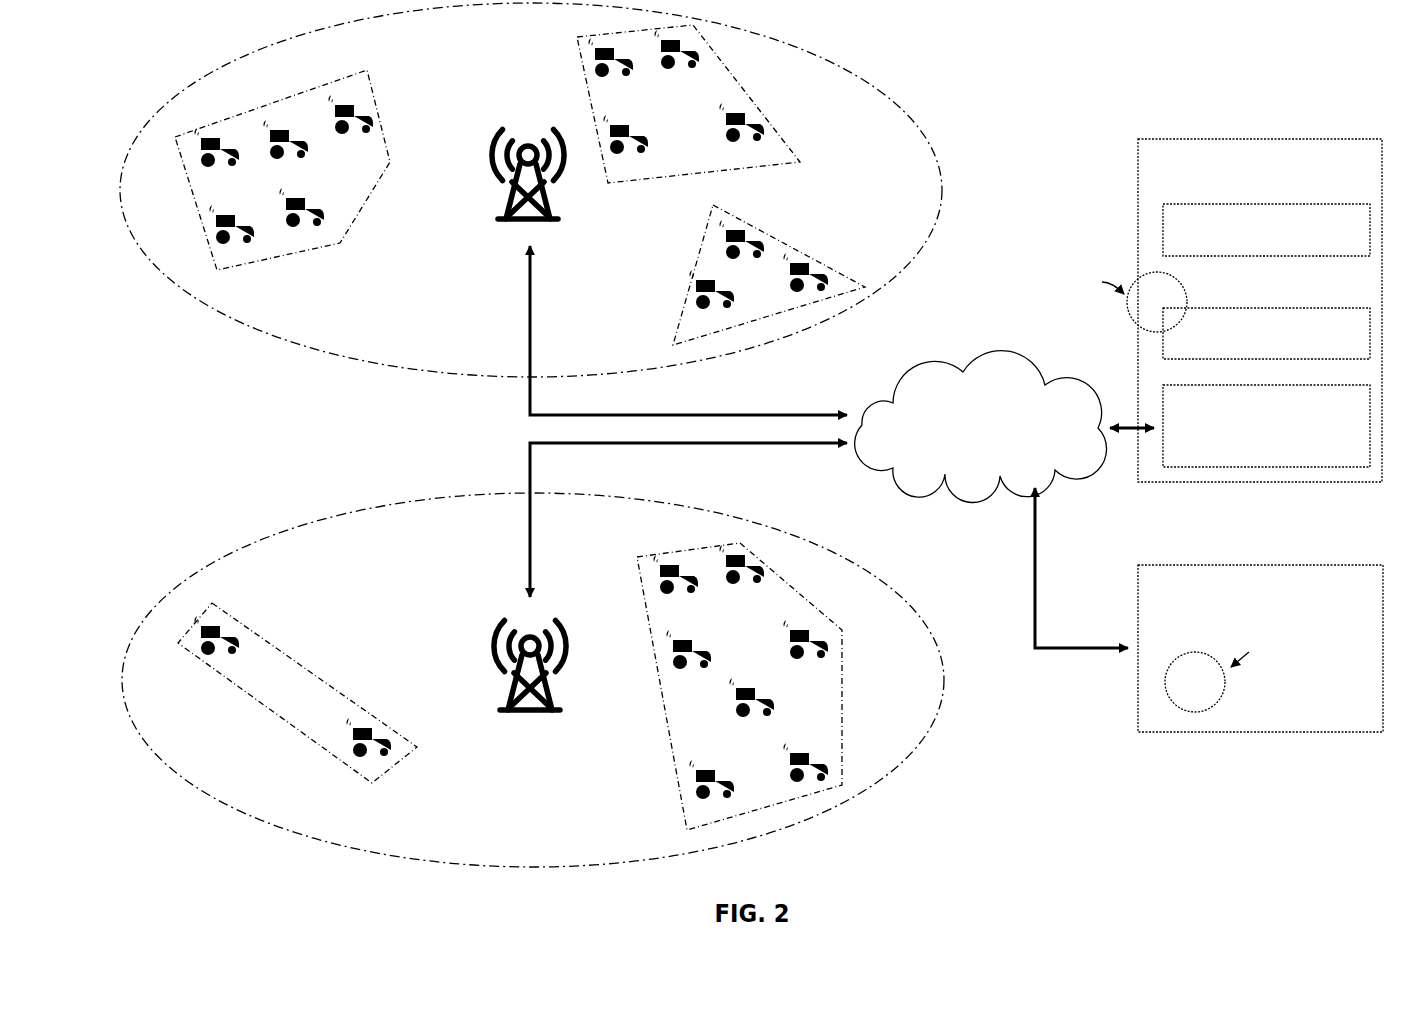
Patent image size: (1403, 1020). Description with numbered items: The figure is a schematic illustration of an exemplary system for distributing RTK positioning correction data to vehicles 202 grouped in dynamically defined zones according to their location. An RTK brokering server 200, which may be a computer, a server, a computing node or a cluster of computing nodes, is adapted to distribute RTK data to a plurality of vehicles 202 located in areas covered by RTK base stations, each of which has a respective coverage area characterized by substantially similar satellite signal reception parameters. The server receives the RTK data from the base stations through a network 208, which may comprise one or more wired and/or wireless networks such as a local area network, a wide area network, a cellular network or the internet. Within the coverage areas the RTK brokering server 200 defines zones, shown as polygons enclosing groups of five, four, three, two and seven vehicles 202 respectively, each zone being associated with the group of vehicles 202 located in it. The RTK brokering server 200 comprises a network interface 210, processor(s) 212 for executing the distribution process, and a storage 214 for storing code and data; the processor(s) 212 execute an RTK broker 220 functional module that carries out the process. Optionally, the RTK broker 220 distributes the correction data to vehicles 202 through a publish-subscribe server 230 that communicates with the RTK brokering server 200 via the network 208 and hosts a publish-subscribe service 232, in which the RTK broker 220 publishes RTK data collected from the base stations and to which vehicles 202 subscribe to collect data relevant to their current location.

The RTK brokering server 200 is at (1152, 140).
The vehicle 202 is at (511, 426).
The network 208 is at (1062, 387).
The network interface 210 is at (1248, 461).
The processor(s) 212 is at (1248, 355).
The storage 214 is at (1248, 251).
The RTK broker 220 is at (1104, 289).
The publish-subscribe server 230 is at (1152, 565).
The publish-subscribe service 232 is at (1266, 683).